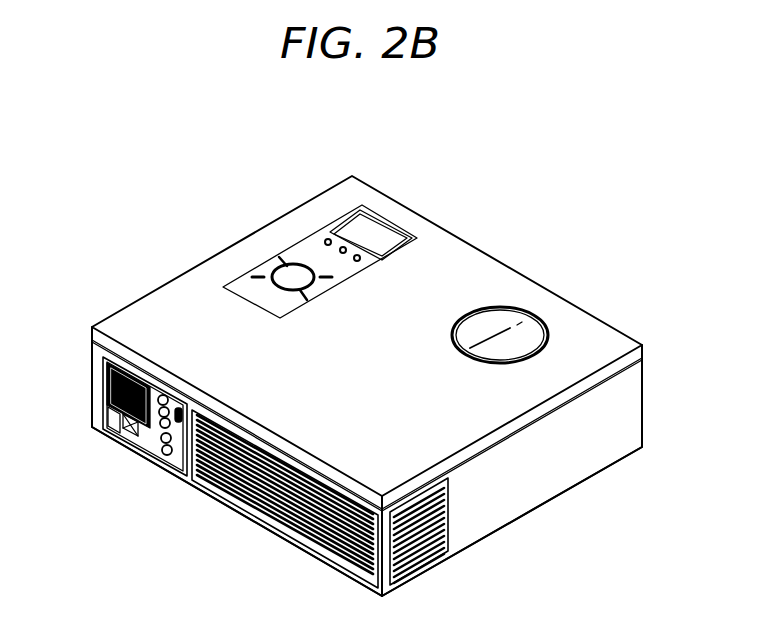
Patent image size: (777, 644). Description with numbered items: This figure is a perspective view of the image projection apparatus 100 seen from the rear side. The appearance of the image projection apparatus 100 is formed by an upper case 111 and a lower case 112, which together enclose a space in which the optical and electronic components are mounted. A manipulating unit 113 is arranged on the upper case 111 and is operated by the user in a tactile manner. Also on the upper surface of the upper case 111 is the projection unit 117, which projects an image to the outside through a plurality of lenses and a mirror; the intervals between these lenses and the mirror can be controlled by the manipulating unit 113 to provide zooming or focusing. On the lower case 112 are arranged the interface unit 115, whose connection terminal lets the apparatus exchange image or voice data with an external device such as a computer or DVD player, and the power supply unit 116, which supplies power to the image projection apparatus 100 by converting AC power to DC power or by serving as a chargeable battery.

The image projection apparatus 100 is at (552, 277).
The upper case 111 is at (643, 351).
The lower case 112 is at (641, 423).
The manipulating unit 113 is at (317, 257).
The interface unit 115 is at (158, 440).
The power supply unit 116 is at (122, 428).
The projection unit 117 is at (498, 322).